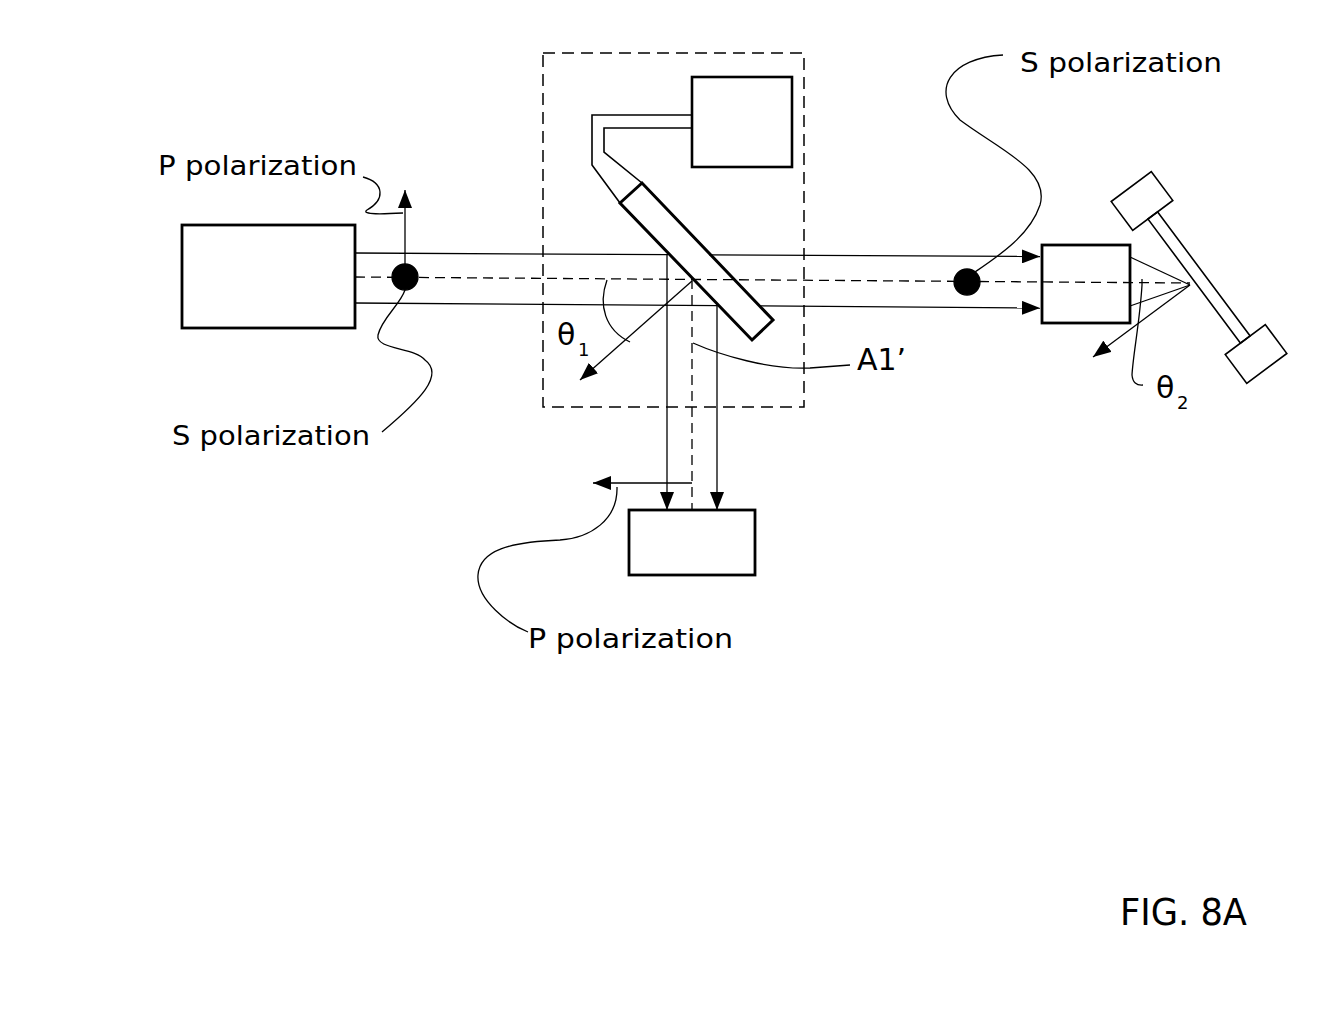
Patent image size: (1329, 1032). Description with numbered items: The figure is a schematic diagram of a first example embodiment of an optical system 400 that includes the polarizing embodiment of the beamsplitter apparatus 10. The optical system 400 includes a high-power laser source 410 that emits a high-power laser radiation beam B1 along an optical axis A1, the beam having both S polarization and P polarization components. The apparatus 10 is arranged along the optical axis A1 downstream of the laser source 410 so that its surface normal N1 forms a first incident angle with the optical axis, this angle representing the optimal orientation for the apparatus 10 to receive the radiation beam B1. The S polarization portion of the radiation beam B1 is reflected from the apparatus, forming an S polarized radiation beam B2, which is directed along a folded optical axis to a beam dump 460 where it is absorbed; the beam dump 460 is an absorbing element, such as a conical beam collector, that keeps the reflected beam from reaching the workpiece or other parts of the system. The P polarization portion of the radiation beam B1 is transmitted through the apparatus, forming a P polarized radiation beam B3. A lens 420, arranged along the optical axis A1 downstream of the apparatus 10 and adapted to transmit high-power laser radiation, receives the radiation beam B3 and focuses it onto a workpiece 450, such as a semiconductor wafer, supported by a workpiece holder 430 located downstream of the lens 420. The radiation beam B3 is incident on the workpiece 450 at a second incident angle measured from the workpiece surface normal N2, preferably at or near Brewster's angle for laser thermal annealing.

The optical system 400 is at (342, 595).
The high-power laser source 410 is at (288, 295).
The lens 420 is at (1113, 302).
The workpiece holder 430 is at (1120, 195).
The workpiece 450 is at (1180, 233).
The beam dump 460 is at (719, 557).
The polarizing beamsplitter apparatus 10 is at (805, 192).
The optical axis A1 is at (467, 277).
The high-power laser radiation beam B1 is at (517, 252).
The reflected radiation beam B2 is at (717, 458).
The transmitted radiation beam B3 is at (943, 308).
The surface normal N1 is at (608, 357).
The workpiece surface normal N2 is at (1108, 353).